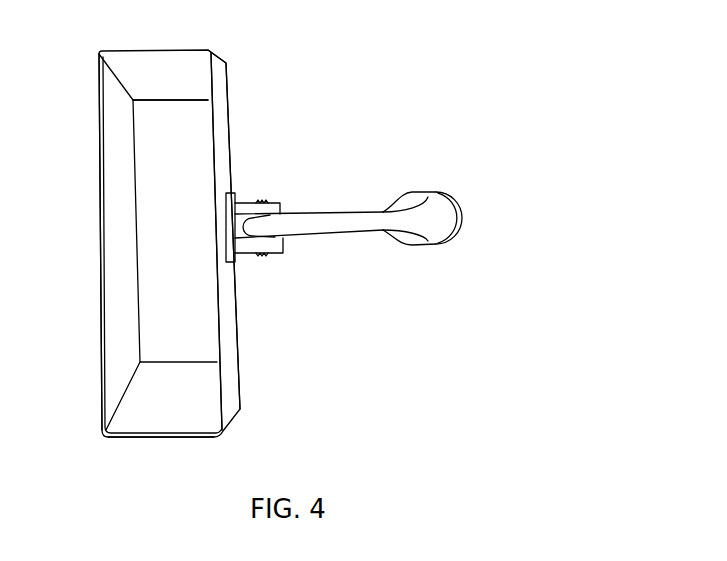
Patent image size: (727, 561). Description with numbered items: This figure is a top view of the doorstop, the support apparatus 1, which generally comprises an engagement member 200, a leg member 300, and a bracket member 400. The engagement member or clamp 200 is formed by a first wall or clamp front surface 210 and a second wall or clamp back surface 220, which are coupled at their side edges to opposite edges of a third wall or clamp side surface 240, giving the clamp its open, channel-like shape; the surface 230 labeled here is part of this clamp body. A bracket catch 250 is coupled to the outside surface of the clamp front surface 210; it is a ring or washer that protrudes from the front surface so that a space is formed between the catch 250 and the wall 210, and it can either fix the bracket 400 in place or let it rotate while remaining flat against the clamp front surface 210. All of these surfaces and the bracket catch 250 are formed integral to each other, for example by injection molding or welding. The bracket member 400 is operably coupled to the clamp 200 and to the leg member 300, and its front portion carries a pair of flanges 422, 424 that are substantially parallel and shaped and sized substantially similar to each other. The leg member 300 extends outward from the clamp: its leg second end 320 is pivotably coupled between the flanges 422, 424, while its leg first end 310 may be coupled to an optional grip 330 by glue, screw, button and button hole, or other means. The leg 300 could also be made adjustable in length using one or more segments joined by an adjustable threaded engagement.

The support apparatus 1 is at (425, 138).
The engagement member 200 is at (82, 221).
The first wall 210 is at (214, 82).
The second wall 220 is at (100, 386).
The top wall 230 is at (177, 108).
The third wall 240 is at (170, 440).
The bracket catch 250 is at (237, 258).
The leg member 300 is at (383, 213).
The leg first end 310 is at (437, 238).
The leg second end 320 is at (274, 212).
The grip 330 is at (468, 212).
The bracket member 400 is at (278, 239).
The flange 422 is at (265, 260).
The flange 424 is at (238, 200).